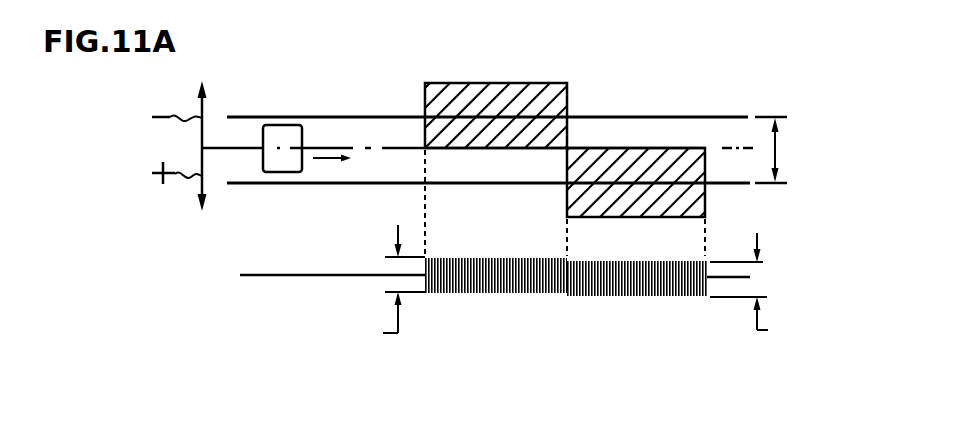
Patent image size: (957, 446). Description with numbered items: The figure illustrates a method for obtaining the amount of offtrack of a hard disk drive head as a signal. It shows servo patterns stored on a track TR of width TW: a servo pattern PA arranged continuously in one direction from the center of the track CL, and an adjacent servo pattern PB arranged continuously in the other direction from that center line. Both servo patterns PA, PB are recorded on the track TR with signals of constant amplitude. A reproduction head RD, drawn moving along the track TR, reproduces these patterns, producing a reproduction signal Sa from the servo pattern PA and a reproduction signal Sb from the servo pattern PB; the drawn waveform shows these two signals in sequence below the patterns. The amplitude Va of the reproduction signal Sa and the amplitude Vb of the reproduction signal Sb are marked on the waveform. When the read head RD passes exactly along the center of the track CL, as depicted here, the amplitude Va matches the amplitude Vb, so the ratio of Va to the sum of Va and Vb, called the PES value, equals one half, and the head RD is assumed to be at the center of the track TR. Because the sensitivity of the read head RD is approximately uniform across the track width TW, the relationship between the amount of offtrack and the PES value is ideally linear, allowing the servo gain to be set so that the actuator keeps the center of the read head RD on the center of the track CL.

The reproduction head RD is at (290, 125).
The center of the track CL is at (402, 139).
The servo pattern PA is at (527, 92).
The servo pattern PB is at (690, 194).
The track TR is at (732, 128).
The track width TW is at (778, 157).
The amplitude of the reproduction signal of servo pattern PA Va is at (389, 288).
The amplitude of the reproduction signal of servo pattern PB Vb is at (754, 293).
The reproduction signal of servo pattern PA Sa is at (520, 309).
The reproduction signal of servo pattern PB Sb is at (652, 308).